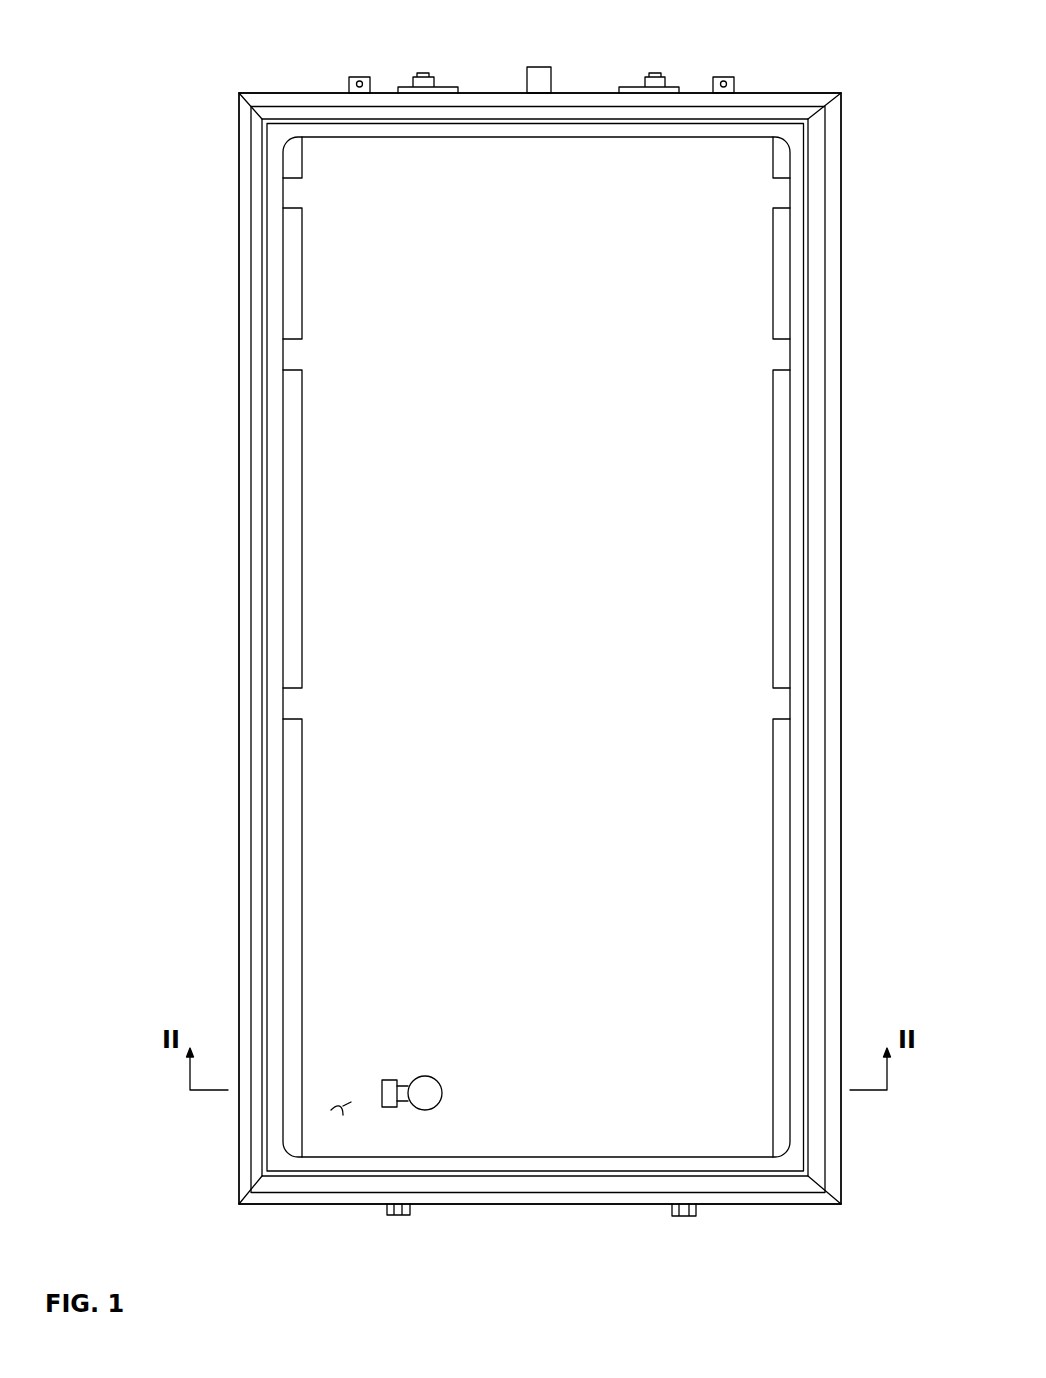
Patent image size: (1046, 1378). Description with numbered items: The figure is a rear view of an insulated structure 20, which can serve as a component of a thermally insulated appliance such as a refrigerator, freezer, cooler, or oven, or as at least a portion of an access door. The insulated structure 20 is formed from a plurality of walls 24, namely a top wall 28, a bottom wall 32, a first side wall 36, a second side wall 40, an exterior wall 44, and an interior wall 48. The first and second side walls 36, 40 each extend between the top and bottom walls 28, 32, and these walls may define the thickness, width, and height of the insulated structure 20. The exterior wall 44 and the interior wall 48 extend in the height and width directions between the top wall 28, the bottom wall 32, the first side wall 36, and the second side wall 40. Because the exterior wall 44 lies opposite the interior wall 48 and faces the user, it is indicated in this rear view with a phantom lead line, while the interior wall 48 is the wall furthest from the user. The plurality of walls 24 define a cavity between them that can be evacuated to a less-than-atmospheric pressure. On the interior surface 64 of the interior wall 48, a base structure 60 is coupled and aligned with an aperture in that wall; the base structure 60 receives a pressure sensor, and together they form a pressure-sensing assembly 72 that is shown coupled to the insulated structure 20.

The insulated structure 20 is at (117, 108).
The plurality of walls 24 is at (342, 205).
The top wall 28 is at (583, 92).
The bottom wall 32 is at (520, 1205).
The first side wall 36 is at (237, 540).
The second side wall 40 is at (838, 722).
The exterior wall 44 is at (670, 412).
The interior wall 48 is at (700, 805).
The base structure 60 is at (436, 1113).
The interior surface 64 is at (340, 1115).
The pressure-sensing assembly 72 is at (403, 1108).